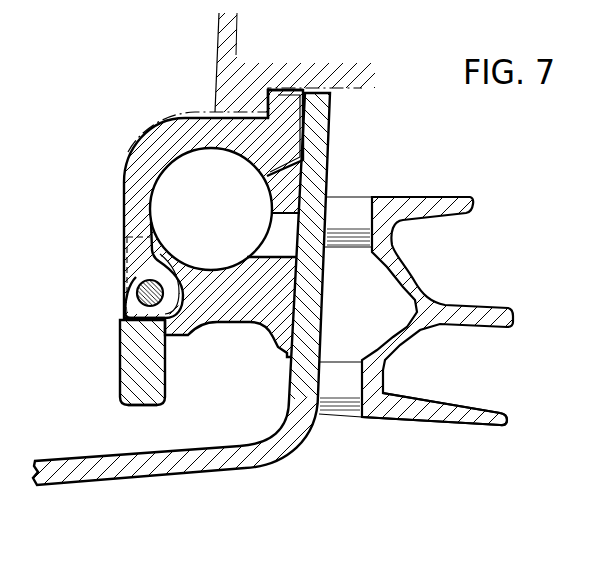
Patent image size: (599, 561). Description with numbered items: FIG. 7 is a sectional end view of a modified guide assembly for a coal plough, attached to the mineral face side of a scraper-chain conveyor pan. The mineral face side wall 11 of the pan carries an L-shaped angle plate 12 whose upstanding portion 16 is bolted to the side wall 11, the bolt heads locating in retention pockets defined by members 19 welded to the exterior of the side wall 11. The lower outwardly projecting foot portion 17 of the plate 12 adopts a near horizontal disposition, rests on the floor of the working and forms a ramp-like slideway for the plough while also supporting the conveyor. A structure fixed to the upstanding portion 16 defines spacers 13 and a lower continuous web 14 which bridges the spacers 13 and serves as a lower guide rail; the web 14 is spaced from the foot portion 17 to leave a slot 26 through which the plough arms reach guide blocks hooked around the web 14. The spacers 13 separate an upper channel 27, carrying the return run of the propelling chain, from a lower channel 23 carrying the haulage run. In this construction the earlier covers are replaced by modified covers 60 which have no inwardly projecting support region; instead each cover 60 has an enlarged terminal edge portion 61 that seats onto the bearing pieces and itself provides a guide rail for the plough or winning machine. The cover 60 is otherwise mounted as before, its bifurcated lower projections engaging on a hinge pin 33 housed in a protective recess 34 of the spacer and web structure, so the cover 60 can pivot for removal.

The mineral face side wall 11 is at (415, 408).
The L-shaped angle plate 12 is at (293, 437).
The spacer 13 is at (257, 258).
The web 14 is at (130, 382).
The upstanding portion 16 is at (312, 302).
The foot portion 17 is at (157, 460).
The retention pocket member 19 is at (351, 211).
The lower channel 23 is at (240, 372).
The slot 26 is at (146, 428).
The upper channel 27 is at (222, 199).
The hinge pin 33 is at (127, 293).
The protective recess 34 is at (142, 318).
The modified cover 60 is at (135, 186).
The enlarged terminal edge portion 61 is at (291, 108).